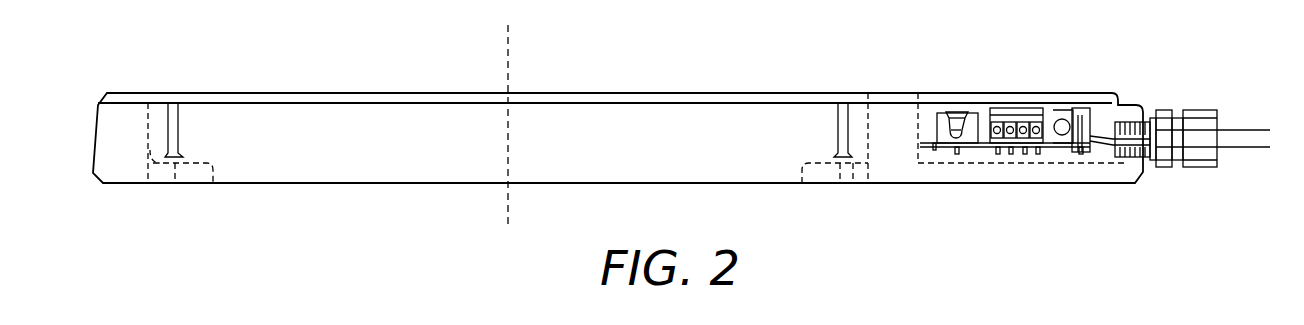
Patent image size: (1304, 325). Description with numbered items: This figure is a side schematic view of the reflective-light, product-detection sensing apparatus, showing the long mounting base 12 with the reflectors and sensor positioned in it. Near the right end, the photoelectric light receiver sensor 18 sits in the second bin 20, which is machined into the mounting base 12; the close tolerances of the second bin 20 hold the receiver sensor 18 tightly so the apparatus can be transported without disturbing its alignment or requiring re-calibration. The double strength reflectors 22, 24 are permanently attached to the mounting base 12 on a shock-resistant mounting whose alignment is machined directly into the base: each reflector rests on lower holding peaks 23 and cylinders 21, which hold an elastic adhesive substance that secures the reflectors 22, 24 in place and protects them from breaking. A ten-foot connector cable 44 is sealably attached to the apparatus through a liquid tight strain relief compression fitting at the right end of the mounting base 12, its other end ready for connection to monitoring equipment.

The mounting base 12 is at (723, 183).
The photoelectric light receiver sensor 18 is at (1053, 118).
The second bin 20 is at (1040, 163).
The cylinders 21 is at (160, 113).
The double strength reflector 22 is at (182, 135).
The lower holding peaks 23 is at (165, 160).
The double strength reflector 24 is at (837, 120).
The connector cable 44 is at (1230, 133).